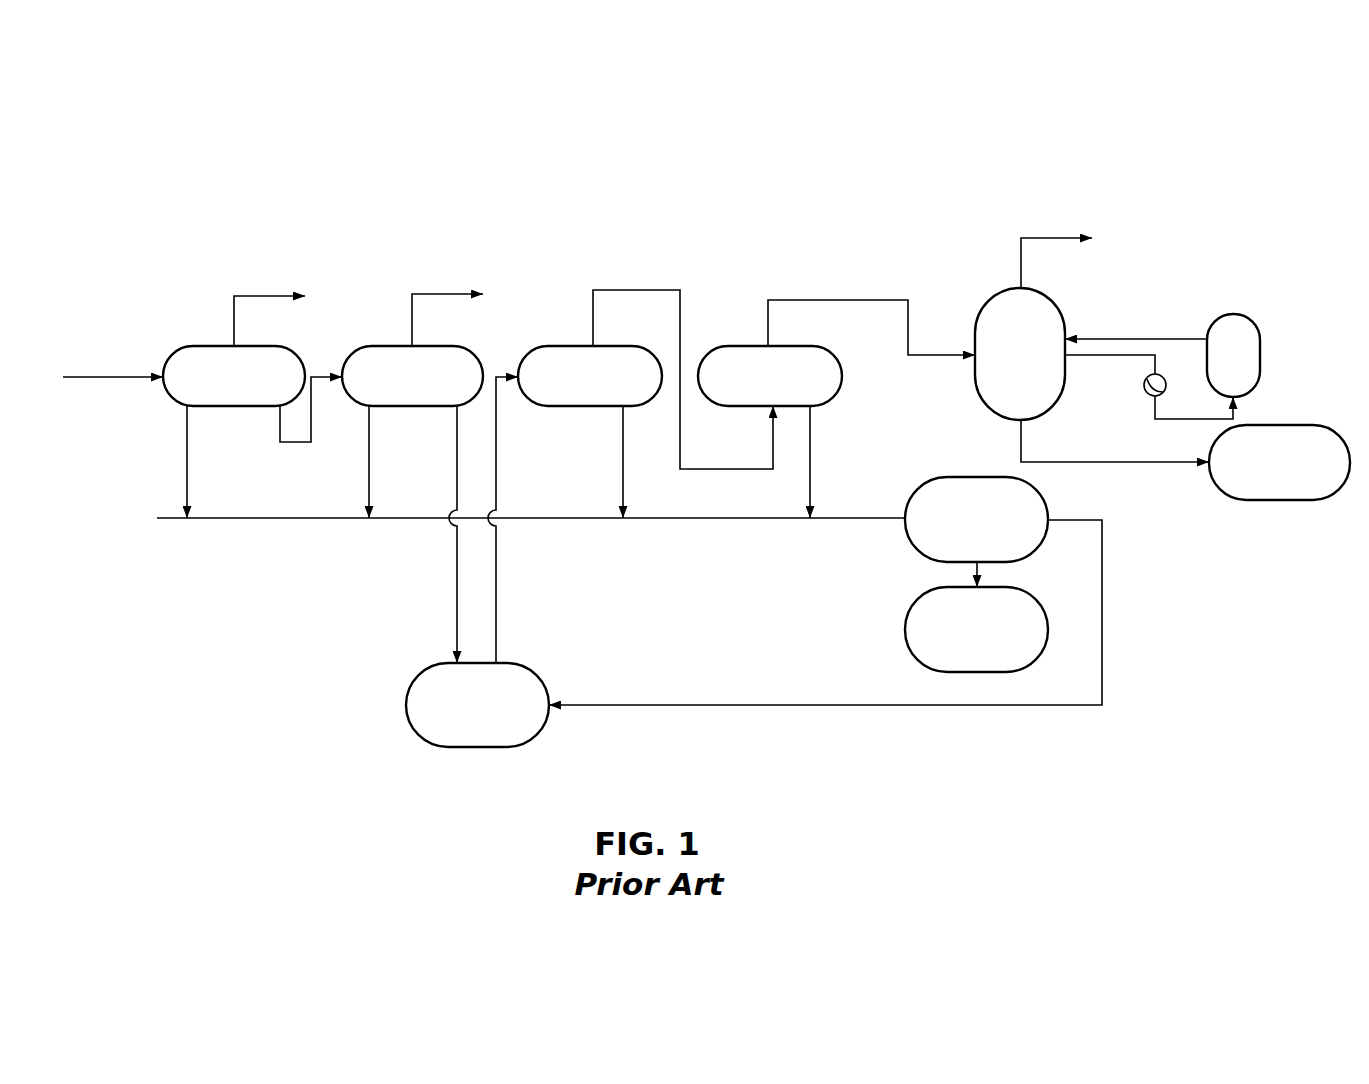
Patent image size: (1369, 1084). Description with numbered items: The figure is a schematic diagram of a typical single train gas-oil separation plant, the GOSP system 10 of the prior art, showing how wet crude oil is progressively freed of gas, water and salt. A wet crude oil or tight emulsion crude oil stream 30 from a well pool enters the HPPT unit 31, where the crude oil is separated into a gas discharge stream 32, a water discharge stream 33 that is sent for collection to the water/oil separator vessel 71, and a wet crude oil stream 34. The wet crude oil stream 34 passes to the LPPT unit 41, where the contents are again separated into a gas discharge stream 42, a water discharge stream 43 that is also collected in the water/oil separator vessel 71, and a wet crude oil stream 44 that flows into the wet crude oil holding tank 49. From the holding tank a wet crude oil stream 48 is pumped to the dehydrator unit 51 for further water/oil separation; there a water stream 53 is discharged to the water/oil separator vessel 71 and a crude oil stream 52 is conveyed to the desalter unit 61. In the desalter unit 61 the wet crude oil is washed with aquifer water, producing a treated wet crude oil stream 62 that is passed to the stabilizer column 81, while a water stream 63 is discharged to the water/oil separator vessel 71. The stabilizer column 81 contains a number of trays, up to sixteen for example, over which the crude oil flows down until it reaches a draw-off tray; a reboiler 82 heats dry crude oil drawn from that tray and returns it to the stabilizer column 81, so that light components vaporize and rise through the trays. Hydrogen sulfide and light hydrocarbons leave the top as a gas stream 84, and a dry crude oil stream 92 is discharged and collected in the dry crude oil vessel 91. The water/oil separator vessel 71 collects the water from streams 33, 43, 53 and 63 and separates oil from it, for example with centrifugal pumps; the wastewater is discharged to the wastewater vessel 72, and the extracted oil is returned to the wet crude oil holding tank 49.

The single train GOSP system 10 is at (143, 122).
The wet crude oil stream 30 is at (118, 373).
The HPPT unit 31 is at (223, 388).
The gas discharge stream 32 is at (233, 334).
The water discharge stream 33 is at (189, 436).
The wet crude oil stream 34 is at (296, 442).
The LPPT unit 41 is at (401, 388).
The gas discharge stream 42 is at (410, 333).
The water discharge stream 43 is at (371, 436).
The wet crude oil stream 44 is at (455, 493).
The wet crude oil stream 48 is at (498, 476).
The wet crude oil holding tank 49 is at (467, 716).
The dehydrator unit 51 is at (579, 388).
The crude oil stream 52 is at (592, 333).
The water stream 53 is at (625, 459).
The desalter unit 61 is at (759, 388).
The treated wet crude oil stream 62 is at (767, 333).
The water stream 63 is at (812, 458).
The water/oil separator vessel 71 is at (966, 533).
The wastewater vessel 72 is at (966, 641).
The stabilizer column 81 is at (1009, 368).
The reboiler 82 is at (1222, 368).
The gas stream 84 is at (1020, 272).
The dry crude oil vessel 91 is at (1269, 473).
The dry crude oil stream 92 is at (1122, 462).